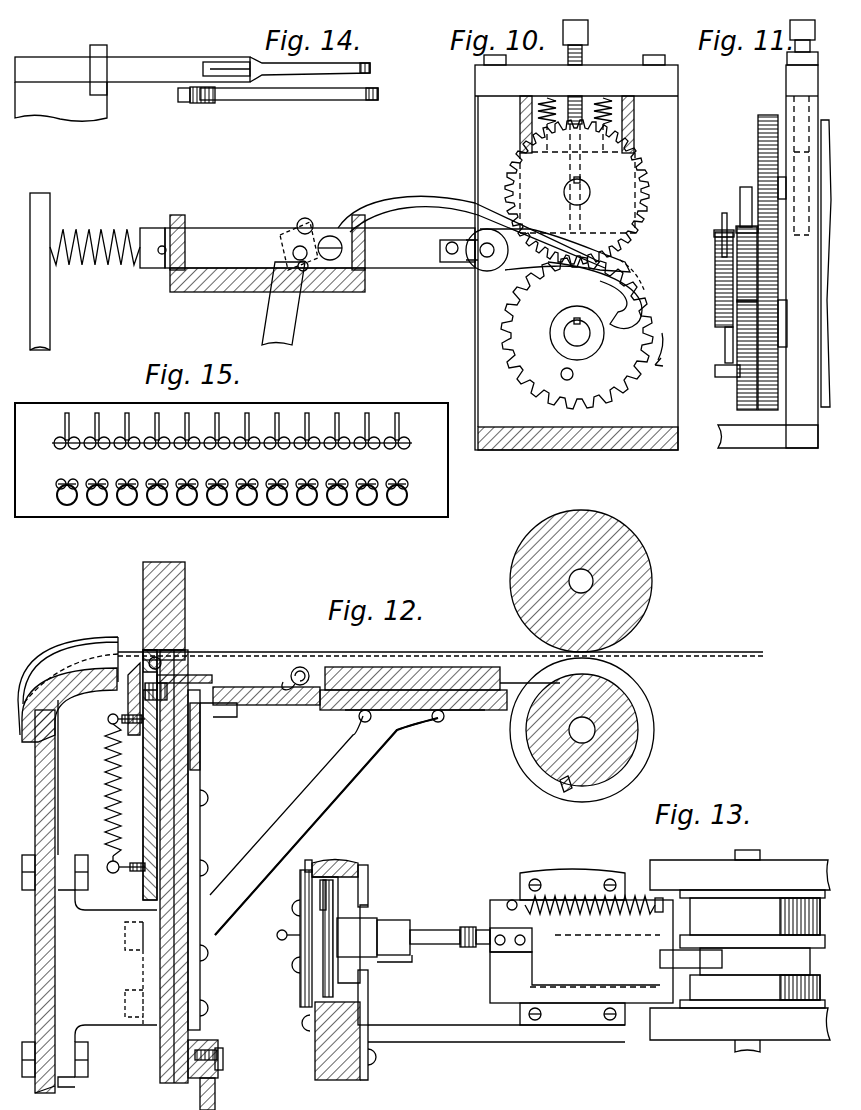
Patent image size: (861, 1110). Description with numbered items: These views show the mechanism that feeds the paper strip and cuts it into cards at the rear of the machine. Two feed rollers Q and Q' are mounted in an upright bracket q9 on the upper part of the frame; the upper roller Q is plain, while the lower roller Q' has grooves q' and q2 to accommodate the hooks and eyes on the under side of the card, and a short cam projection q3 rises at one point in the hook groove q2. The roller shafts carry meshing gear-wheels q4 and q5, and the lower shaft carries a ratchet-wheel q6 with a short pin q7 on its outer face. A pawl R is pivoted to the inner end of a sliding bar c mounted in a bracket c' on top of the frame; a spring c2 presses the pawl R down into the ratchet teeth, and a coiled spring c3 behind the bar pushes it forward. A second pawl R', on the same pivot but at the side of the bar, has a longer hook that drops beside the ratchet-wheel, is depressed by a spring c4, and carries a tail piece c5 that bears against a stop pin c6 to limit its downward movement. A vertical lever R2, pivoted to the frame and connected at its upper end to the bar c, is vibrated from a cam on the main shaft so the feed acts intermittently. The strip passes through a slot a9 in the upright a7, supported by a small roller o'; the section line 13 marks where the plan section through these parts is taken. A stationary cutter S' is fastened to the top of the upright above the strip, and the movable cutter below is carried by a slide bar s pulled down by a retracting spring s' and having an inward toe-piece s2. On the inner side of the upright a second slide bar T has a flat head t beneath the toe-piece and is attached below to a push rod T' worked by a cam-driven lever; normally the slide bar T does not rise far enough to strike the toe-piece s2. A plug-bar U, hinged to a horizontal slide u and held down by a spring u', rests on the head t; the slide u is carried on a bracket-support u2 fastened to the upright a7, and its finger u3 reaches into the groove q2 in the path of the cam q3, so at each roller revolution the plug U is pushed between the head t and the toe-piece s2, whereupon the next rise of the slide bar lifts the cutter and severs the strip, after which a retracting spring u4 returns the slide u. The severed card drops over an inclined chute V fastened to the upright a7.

In FIG. 14, the sliding bar c is at (132, 89).
In FIG. 10, the sliding bar c is at (307, 244).
In FIG. 14, the bracket c' is at (116, 77).
In FIG. 10, the bracket c' is at (286, 260).
In FIG. 10, the spring c2 is at (430, 196).
In FIG. 11, the spring c2 is at (742, 192).
In FIG. 10, the coiled spring c3 is at (120, 270).
In FIG. 10, the spring c4 is at (395, 222).
In FIG. 11, the spring c4 is at (722, 216).
In FIG. 14, the tail piece c5 is at (182, 102).
In FIG. 10, the tail piece c5 is at (455, 255).
In FIG. 14, the stop pin c6 is at (200, 103).
In FIG. 10, the stop pin c6 is at (452, 242).
In FIG. 14, the pawl R is at (322, 69).
In FIG. 10, the pawl R is at (563, 250).
In FIG. 11, the pawl R is at (723, 264).
In FIG. 14, the second pawl R' is at (302, 93).
In FIG. 10, the second pawl R' is at (626, 303).
In FIG. 11, the second pawl R' is at (712, 296).
In FIG. 10, the vertical lever R2 is at (292, 318).
In FIG. 10, the gear-wheel q4 is at (577, 192).
In FIG. 11, the gear-wheel q4 is at (757, 140).
In FIG. 10, the gear-wheel q5 is at (628, 305).
In FIG. 11, the gear-wheel q5 is at (779, 318).
In FIG. 10, the ratchet-wheel q6 is at (582, 333).
In FIG. 11, the ratchet-wheel q6 is at (740, 395).
In FIG. 10, the short pin q7 is at (562, 372).
In FIG. 11, the short pin q7 is at (718, 380).
In FIG. 10, the upright bracket q9 is at (576, 235).
In FIG. 11, the groove q' is at (774, 249).
In FIG. 13, the groove q' is at (752, 919).
In FIG. 13, the hook groove q2 is at (752, 978).
In FIG. 12, the cam projection q3 is at (562, 792).
In FIG. 12, the section line 13 is at (745, 658).
In FIG. 12, the inclined chute V is at (50, 662).
In FIG. 12, the stationary cutter S' is at (133, 812).
In FIG. 12, the slide bar s is at (114, 775).
In FIG. 12, the retracting spring s' is at (108, 793).
In FIG. 13, the retracting spring s' is at (281, 947).
In FIG. 12, the toe-piece s2 is at (200, 700).
In FIG. 13, the toe-piece s2 is at (357, 937).
In FIG. 12, the slot a9 is at (176, 650).
In FIG. 13, the slot a9 is at (362, 990).
In FIG. 12, the upright a7 is at (160, 1038).
In FIG. 12, the small roller o' is at (193, 668).
In FIG. 13, the small roller o' is at (360, 889).
In FIG. 12, the plug-bar U is at (235, 690).
In FIG. 13, the plug-bar U is at (412, 928).
In FIG. 12, the horizontal slide u is at (413, 669).
In FIG. 13, the horizontal slide u is at (581, 951).
In FIG. 12, the depressing spring u' is at (300, 654).
In FIG. 13, the depressing spring u' is at (450, 919).
In FIG. 12, the bracket-support u2 is at (392, 736).
In FIG. 13, the bracket-support u2 is at (565, 1042).
In FIG. 12, the finger u3 is at (530, 690).
In FIG. 13, the finger u3 is at (705, 950).
In FIG. 13, the retracting spring u4 is at (590, 900).
In FIG. 12, the flat head t is at (232, 705).
In FIG. 13, the flat head t is at (405, 963).
In FIG. 12, the second slide bar T is at (212, 860).
In FIG. 12, the push rod T' is at (217, 1075).
In FIG. 12, the upper feed roller Q is at (581, 581).
In FIG. 12, the lower feed roller Q' is at (601, 730).
In FIG. 13, the lower feed roller Q' is at (740, 935).